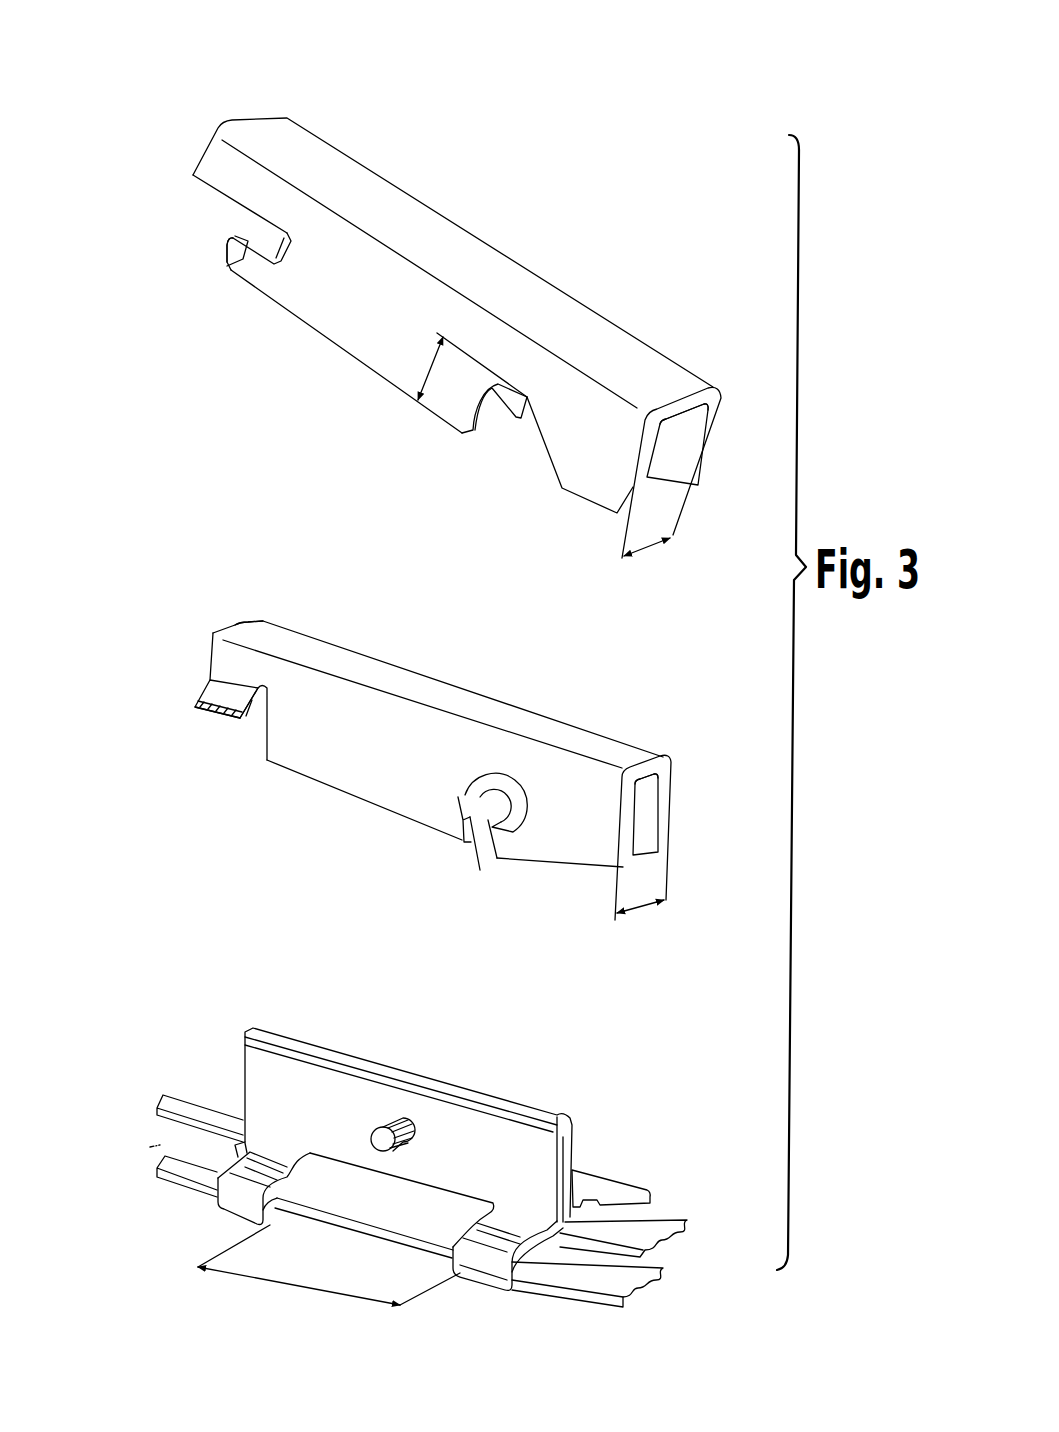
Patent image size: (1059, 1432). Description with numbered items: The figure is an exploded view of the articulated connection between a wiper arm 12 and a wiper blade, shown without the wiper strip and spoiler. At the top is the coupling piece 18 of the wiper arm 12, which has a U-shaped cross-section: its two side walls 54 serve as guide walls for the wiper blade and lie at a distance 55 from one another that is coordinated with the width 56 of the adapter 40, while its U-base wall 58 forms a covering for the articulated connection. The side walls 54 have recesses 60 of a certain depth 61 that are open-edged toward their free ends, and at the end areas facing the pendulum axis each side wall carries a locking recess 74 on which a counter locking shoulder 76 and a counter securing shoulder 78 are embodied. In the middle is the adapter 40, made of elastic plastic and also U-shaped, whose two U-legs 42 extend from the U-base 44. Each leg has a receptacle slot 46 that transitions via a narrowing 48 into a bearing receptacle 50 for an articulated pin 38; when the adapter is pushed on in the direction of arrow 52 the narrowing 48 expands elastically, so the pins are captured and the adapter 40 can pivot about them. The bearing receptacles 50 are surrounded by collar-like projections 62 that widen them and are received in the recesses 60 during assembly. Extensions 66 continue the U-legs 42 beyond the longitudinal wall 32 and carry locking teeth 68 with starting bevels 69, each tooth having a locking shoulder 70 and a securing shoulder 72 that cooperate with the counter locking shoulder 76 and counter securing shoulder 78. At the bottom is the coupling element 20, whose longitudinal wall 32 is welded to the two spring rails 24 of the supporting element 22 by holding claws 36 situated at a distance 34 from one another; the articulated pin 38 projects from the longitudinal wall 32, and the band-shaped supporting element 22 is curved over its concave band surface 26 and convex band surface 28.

The wiper arm 12 is at (269, 106).
The coupling piece 18 is at (476, 210).
The coupling element 20 is at (586, 1108).
The supporting element 22 is at (147, 1127).
The spring rails 24 is at (195, 1092).
The concave curved band surface 26 is at (673, 1237).
The convex curved band surface 28 is at (688, 1224).
The longitudinal wall 32 is at (307, 1080).
The distance 34 is at (292, 1286).
The holding claws 36 is at (241, 1203).
The articulated pin 38 is at (380, 1137).
The adapter 40 is at (638, 740).
The U-legs 42 is at (670, 807).
The U-base 44 is at (663, 747).
The receptacle slots 46 is at (468, 850).
The narrowing 48 is at (488, 858).
The bearing receptacles 50 is at (477, 793).
The arrow 52 is at (490, 880).
The side walls 54 is at (713, 443).
The distance 55 is at (652, 542).
The width 56 is at (650, 906).
The U-base wall 58 is at (690, 403).
The recesses 60 is at (516, 451).
The depth 61 is at (427, 369).
The collar-like projections 62 is at (470, 792).
The extensions 66 is at (223, 650).
The locking tooth 68 is at (180, 702).
The starting bevels 69 is at (210, 688).
The locking shoulder 70 is at (247, 710).
The securing shoulder 72 is at (252, 712).
The locking recess 74 is at (226, 214).
The counter locking shoulder 76 is at (237, 230).
The counter securing shoulder 78 is at (250, 243).